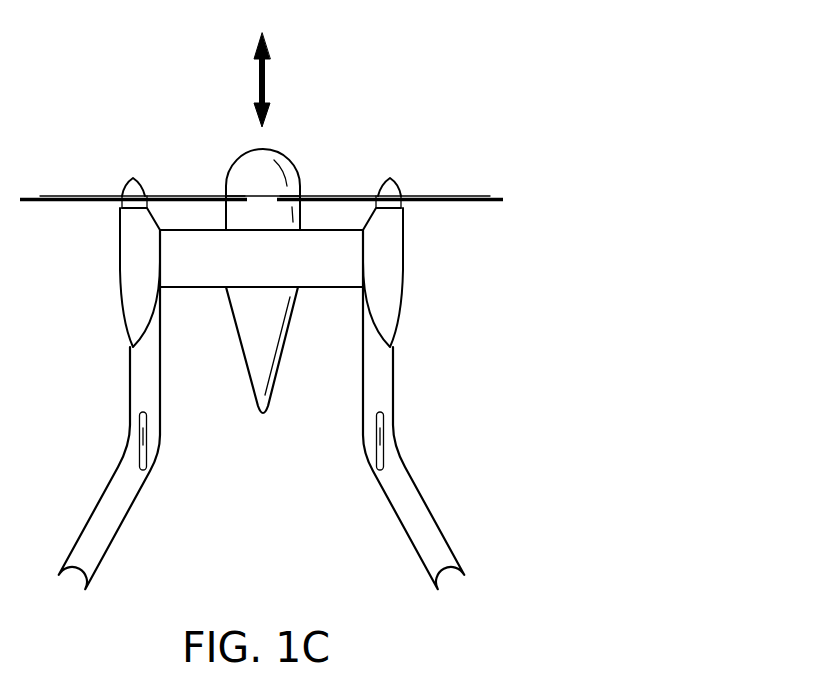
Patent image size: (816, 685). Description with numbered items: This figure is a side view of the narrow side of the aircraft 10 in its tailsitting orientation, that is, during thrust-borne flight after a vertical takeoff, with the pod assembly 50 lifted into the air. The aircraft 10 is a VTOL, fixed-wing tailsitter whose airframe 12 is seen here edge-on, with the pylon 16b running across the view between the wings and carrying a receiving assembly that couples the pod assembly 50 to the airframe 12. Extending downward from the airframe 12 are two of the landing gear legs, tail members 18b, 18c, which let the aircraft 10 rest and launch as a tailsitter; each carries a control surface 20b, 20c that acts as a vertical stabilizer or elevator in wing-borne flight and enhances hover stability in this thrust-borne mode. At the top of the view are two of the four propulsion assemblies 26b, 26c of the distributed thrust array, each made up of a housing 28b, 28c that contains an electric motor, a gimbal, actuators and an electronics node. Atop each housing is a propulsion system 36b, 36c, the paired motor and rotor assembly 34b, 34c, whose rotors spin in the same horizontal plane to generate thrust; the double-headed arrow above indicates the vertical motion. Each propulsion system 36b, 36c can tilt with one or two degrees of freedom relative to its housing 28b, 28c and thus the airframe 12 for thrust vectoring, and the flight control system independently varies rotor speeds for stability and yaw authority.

The aircraft 10 is at (168, 65).
The airframe 12 is at (326, 300).
The pylon 16b is at (202, 290).
The tail member 18b is at (108, 560).
The tail member 18c is at (415, 560).
The control surface 20b is at (146, 450).
The control surface 20c is at (377, 450).
The propulsion assembly 26b is at (128, 280).
The propulsion assembly 26c is at (395, 280).
The housing 28b is at (128, 225).
The housing 28c is at (395, 225).
The rotor assembly 34b is at (62, 196).
The rotor assembly 34c is at (460, 196).
The propulsion system 36b is at (126, 166).
The propulsion system 36c is at (397, 166).
The pod assembly 50 is at (240, 372).